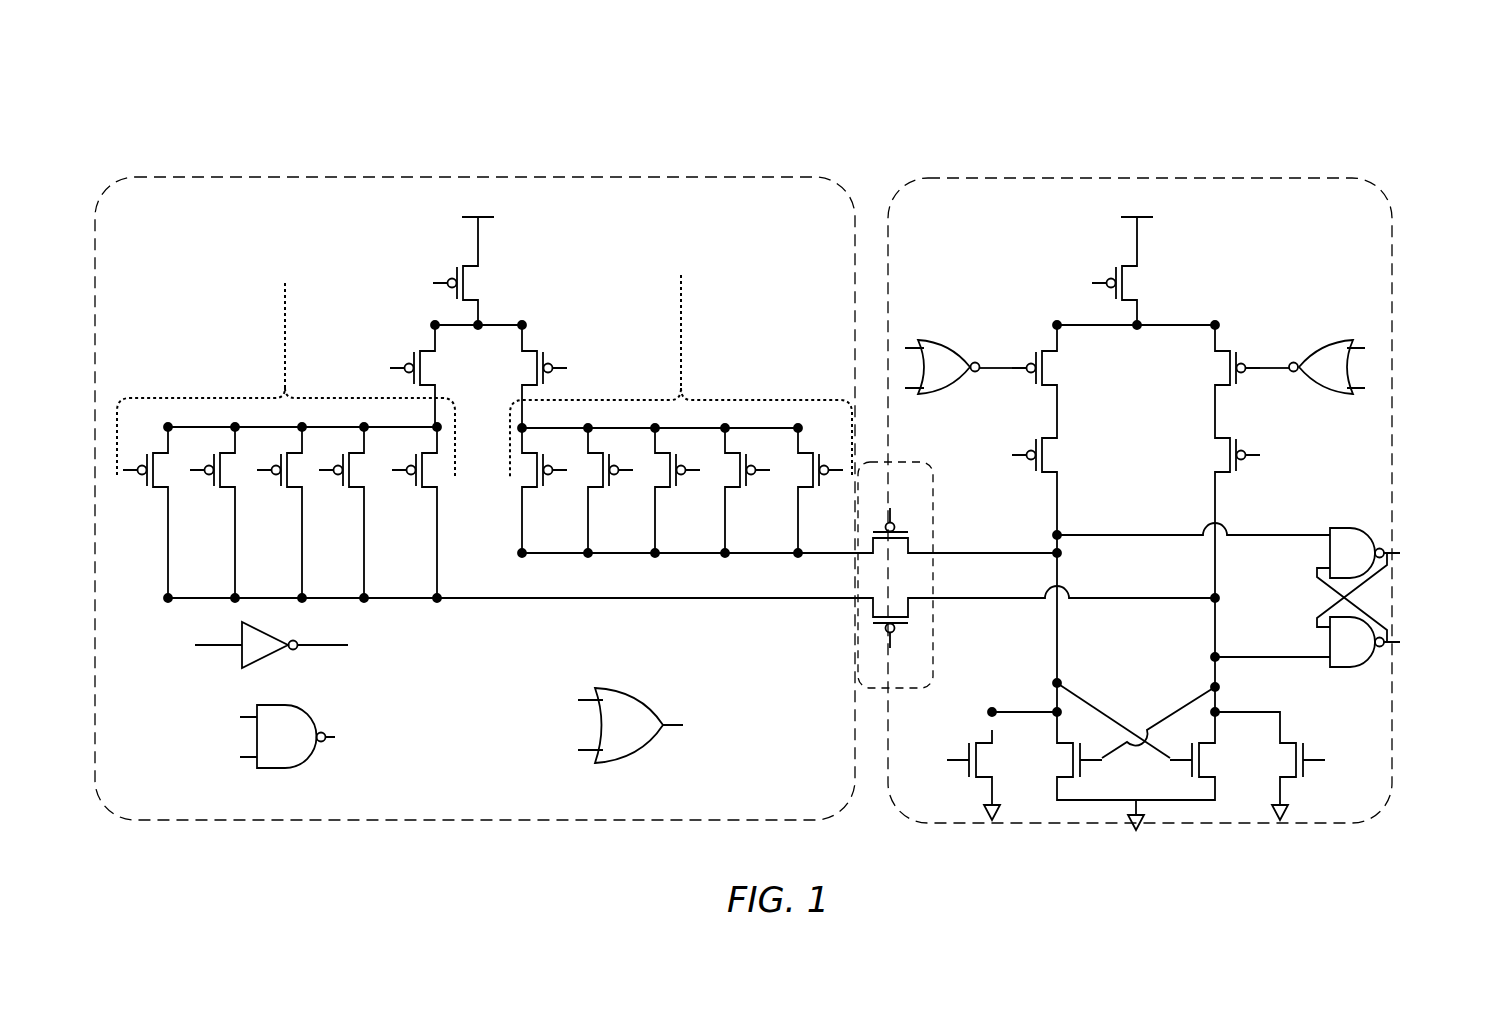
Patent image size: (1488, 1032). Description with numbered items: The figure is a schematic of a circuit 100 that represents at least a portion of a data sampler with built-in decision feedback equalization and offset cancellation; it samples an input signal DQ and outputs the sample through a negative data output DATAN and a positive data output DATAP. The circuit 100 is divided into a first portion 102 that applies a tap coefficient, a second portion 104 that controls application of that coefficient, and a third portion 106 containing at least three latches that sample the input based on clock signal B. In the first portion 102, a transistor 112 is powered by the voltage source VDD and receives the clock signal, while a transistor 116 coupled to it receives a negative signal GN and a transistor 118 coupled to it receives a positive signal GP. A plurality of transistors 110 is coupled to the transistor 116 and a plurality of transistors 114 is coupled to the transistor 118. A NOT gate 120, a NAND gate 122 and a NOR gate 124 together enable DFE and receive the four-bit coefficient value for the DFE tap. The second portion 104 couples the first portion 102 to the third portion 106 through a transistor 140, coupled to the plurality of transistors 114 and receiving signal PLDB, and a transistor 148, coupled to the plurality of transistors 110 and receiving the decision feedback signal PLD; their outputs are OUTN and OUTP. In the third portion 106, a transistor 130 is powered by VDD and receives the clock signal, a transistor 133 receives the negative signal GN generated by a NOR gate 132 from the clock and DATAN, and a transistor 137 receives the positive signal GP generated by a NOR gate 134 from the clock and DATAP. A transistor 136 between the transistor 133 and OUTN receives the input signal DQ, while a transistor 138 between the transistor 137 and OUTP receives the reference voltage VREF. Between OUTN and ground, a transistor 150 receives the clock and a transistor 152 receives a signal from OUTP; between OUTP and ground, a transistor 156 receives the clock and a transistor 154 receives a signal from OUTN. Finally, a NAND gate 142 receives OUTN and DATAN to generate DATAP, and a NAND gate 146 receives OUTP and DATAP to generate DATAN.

The circuit 100 is at (207, 117).
The first portion 102 is at (428, 177).
The second portion 104 is at (936, 618).
The third portion 106 is at (1168, 177).
The plurality of transistors 110 is at (285, 283).
The transistor 112 is at (378, 283).
The plurality of transistors 114 is at (681, 275).
The transistor 116 is at (350, 368).
The transistor 118 is at (603, 368).
The NOT gate 120 is at (277, 667).
The NAND gate 122 is at (287, 781).
The NOR gate 124 is at (633, 768).
The transistor 130 is at (1040, 283).
The NOR gate 132 is at (932, 333).
The transistor 133 is at (1064, 368).
The NOR gate 134 is at (1330, 333).
The transistor 136 is at (986, 446).
The transistor 137 is at (1210, 368).
The transistor 138 is at (1320, 457).
The transistor 140 is at (915, 523).
The NAND gate 142 is at (1330, 525).
The NAND gate 146 is at (1350, 670).
The transistor 148 is at (895, 678).
The transistor 150 is at (897, 758).
The transistor 152 is at (1052, 758).
The transistor 154 is at (1220, 758).
The transistor 156 is at (1375, 758).